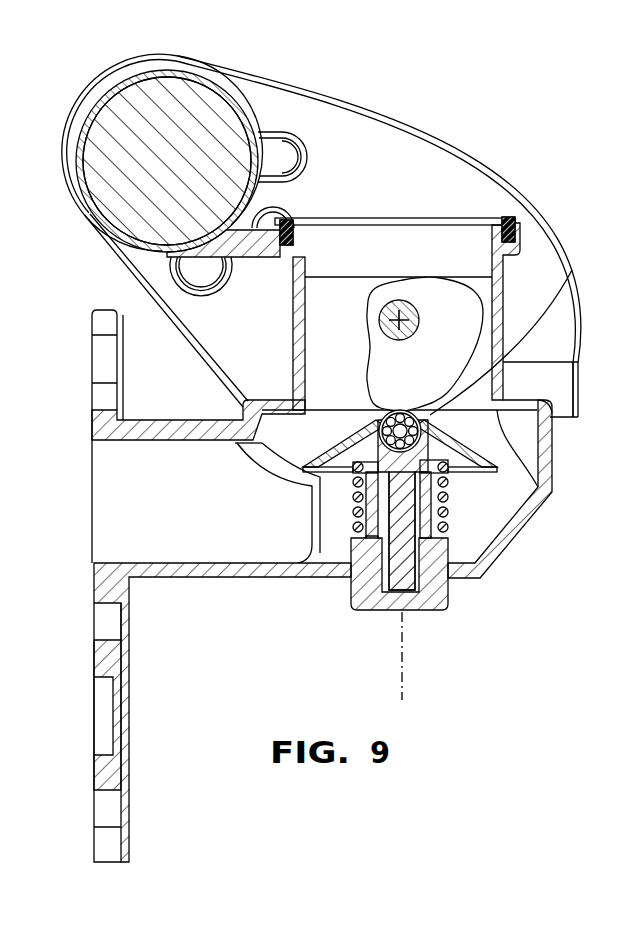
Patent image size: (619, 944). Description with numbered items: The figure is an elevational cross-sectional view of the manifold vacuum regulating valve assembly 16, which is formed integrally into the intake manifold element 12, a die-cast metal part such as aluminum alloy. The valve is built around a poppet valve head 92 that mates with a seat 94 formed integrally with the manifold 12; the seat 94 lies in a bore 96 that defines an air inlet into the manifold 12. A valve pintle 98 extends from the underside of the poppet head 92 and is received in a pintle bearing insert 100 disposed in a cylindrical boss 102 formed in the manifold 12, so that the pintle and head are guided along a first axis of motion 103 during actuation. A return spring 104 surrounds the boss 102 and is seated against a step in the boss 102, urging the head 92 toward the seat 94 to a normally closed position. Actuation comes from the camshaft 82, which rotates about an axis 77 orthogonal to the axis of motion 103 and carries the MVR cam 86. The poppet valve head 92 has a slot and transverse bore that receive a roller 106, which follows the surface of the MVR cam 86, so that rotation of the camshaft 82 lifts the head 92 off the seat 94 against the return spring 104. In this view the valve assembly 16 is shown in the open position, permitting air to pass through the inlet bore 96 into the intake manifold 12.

The intake manifold element 12 is at (197, 573).
The manifold vacuum regulating valve assembly 16 is at (562, 438).
The camshaft axis 77 is at (399, 320).
The camshaft 82 is at (387, 302).
The MVR cam 86 is at (493, 280).
The poppet valve head 92 is at (442, 448).
The seat 94 is at (551, 491).
The bore 96 is at (302, 358).
The valve pintle 98 is at (397, 578).
The pintle bearing insert 100 is at (366, 508).
The cylindrical boss 102 is at (430, 498).
The first axis of motion 103 is at (403, 647).
The return spring 104 is at (351, 490).
The roller 106 is at (571, 358).